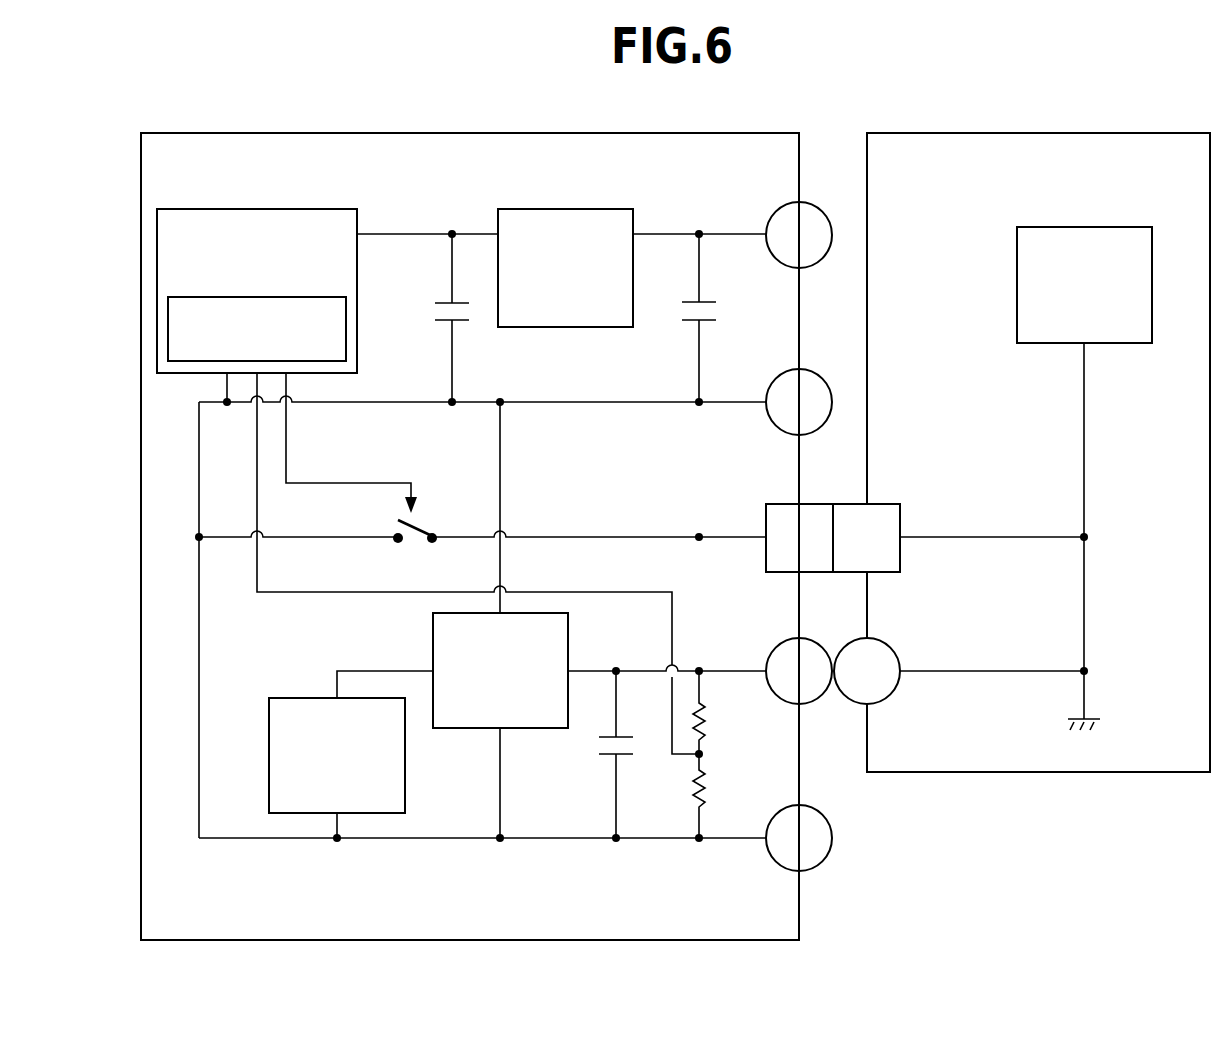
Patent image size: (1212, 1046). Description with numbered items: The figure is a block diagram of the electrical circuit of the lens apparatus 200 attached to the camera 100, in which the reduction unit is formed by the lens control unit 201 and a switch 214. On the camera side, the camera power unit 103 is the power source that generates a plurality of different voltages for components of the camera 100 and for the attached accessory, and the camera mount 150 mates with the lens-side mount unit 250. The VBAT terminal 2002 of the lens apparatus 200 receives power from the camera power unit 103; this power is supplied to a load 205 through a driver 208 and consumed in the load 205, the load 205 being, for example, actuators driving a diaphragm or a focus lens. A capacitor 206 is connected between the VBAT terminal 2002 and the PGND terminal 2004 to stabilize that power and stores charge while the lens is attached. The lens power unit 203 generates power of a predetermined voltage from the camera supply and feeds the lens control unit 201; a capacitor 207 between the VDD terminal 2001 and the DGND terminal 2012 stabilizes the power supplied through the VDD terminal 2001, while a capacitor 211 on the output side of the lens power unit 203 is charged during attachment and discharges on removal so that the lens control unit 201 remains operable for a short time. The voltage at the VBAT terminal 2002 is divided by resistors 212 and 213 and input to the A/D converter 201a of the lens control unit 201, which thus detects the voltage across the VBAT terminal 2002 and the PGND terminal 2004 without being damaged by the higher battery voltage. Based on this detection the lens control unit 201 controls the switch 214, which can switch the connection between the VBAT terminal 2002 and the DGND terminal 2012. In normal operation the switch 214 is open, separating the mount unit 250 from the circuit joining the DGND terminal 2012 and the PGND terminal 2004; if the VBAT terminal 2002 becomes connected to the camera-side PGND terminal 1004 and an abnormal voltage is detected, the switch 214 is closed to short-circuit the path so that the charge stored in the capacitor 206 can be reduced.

The lens apparatus 200 is at (470, 133).
The camera 100 is at (1040, 133).
The lens control unit 201 is at (260, 209).
The A/D converter 201a is at (348, 328).
The capacitor 211 is at (445, 323).
The lens power unit 203 is at (570, 327).
The capacitor 207 is at (690, 322).
The VDD terminal 2001 is at (787, 268).
The DGND terminal 2012 is at (775, 430).
The switch 214 is at (423, 523).
The mount unit 250 is at (766, 556).
The camera mount 150 is at (900, 556).
The VBAT terminal 2002 is at (771, 648).
The PGND terminal 1004 is at (892, 695).
The resistor 212 is at (706, 722).
The resistor 213 is at (706, 784).
The PGND terminal 2004 is at (785, 871).
The driver 208 is at (462, 728).
The capacitor 206 is at (606, 760).
The load 205 is at (305, 698).
The camera power unit 103 is at (1017, 285).